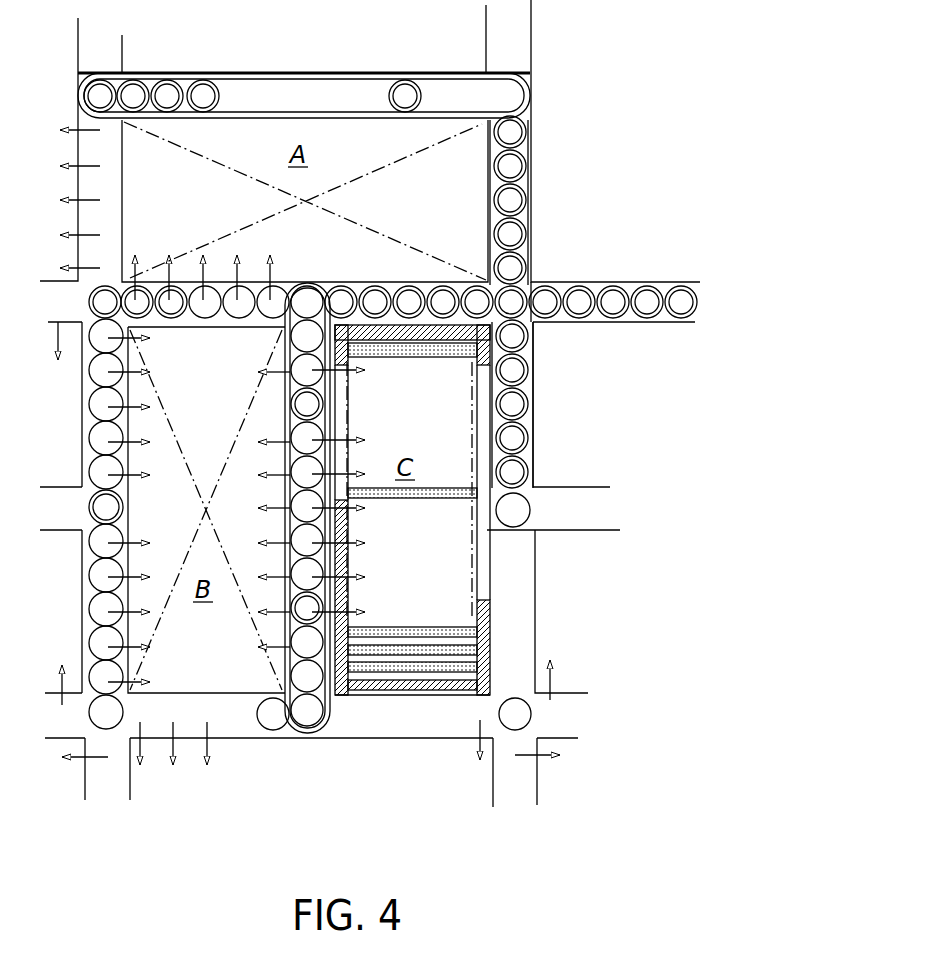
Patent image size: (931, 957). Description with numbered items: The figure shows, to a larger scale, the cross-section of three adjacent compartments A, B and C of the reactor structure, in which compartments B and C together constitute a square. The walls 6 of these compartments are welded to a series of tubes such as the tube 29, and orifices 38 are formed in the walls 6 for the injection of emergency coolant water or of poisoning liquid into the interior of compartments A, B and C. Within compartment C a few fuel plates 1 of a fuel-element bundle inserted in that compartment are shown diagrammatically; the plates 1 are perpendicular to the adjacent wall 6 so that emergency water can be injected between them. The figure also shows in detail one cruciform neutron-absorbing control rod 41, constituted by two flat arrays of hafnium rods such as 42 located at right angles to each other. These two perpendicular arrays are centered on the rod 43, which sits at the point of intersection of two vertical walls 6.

The fuel plates 1 is at (430, 352).
The walls 6 is at (290, 74).
The tube 29 is at (290, 382).
The orifices 38 is at (190, 282).
The cruciform neutron-absorbing control rod 41 is at (549, 283).
The hafnium rods 42 is at (525, 160).
The rod 43 is at (518, 312).